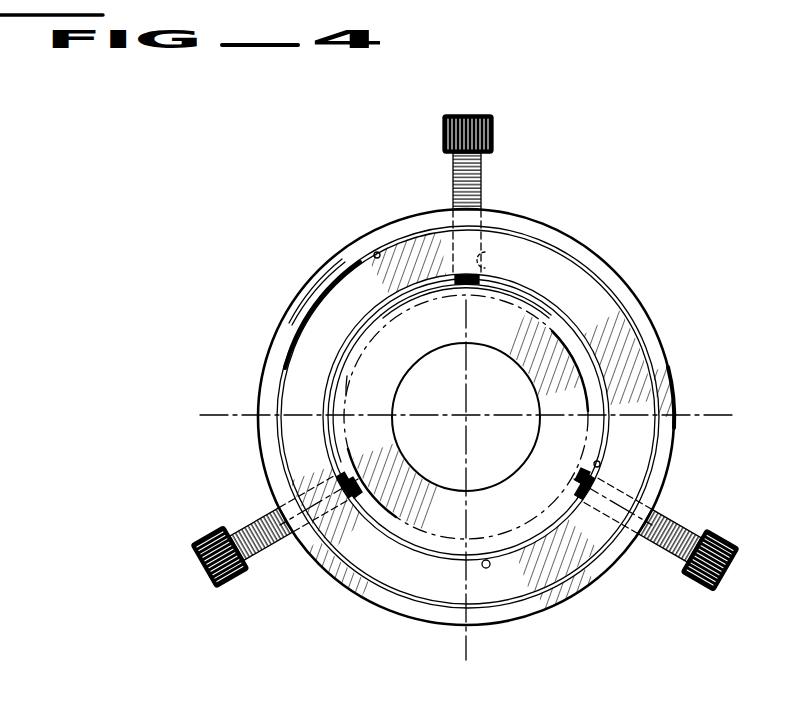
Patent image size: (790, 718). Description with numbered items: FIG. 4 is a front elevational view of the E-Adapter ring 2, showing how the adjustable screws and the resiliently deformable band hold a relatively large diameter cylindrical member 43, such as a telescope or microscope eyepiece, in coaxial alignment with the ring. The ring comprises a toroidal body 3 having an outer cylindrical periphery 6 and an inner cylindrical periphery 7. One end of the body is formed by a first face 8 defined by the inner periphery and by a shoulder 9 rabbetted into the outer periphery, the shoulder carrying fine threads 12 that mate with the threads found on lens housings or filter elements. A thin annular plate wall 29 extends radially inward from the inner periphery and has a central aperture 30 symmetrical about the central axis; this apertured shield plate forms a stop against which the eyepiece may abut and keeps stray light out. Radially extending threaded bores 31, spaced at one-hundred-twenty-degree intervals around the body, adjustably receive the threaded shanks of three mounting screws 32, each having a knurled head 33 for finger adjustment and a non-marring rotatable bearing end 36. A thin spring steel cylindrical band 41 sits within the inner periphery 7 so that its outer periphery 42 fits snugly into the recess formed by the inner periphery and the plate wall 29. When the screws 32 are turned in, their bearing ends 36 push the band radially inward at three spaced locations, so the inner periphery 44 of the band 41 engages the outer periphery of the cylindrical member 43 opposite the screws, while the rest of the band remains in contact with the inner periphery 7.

The E-Adapter ring 2 is at (567, 218).
The toroidal body 3 is at (641, 318).
The outer cylindrical periphery 6 is at (622, 278).
The inner cylindrical periphery 7 is at (604, 466).
The first face 8 is at (310, 345).
The shoulder 9 is at (376, 254).
The fine threads 12 is at (421, 231).
The annular plate wall 29 is at (568, 468).
The central aperture 30 is at (534, 389).
The threaded bores 31 is at (489, 260).
The mounting screws 32 is at (482, 189).
The knurled head 33 is at (492, 134).
The rotatable bearing end 36 is at (577, 483).
The cylindrical band 41 is at (343, 440).
The outer periphery of the band 42 is at (483, 560).
The cylindrical member 43 is at (346, 386).
The inner periphery of the band 44 is at (369, 317).